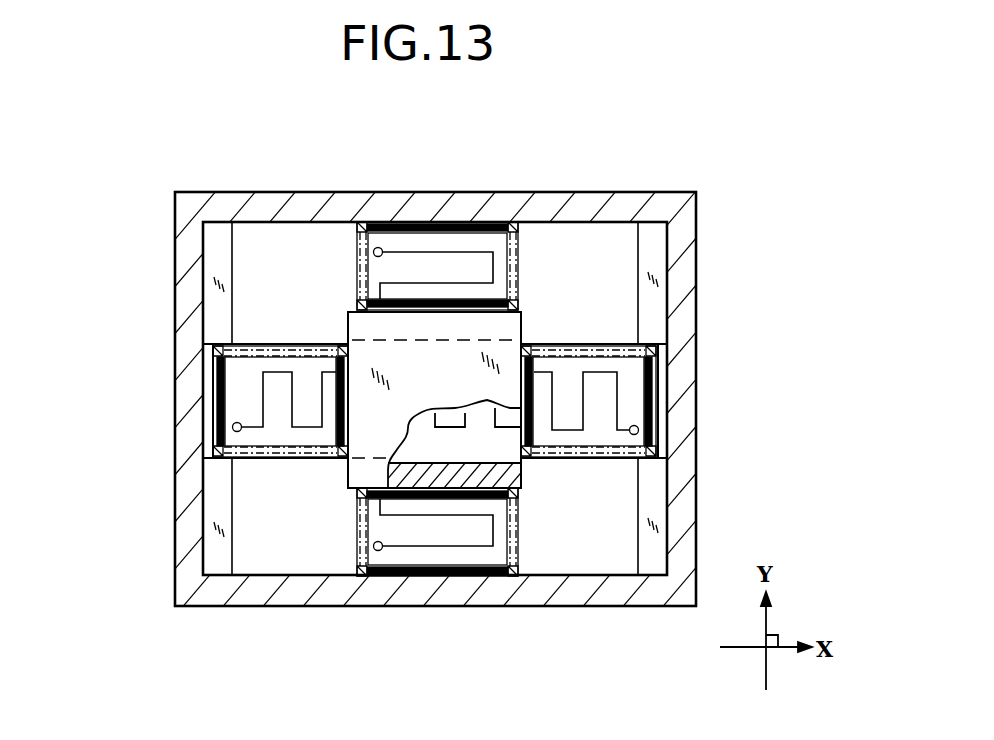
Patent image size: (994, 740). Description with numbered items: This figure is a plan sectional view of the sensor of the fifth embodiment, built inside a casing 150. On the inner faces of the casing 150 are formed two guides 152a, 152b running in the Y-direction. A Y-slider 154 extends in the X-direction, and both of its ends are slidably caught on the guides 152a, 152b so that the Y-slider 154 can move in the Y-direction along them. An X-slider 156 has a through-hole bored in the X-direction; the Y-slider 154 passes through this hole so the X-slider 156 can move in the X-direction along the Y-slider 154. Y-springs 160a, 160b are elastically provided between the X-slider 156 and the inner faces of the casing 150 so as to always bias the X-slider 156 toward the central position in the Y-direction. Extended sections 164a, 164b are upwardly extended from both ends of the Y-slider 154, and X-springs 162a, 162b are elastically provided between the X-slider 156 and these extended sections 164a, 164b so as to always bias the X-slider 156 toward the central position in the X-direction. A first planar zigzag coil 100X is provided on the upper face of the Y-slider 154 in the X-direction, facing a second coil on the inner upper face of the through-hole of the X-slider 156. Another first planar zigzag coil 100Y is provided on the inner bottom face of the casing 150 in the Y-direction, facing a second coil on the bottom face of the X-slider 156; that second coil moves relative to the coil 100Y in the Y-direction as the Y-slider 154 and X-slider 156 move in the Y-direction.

The casing 150 is at (623, 202).
The guide 152a is at (653, 252).
The guide 152b is at (215, 249).
The Y-slider 154 is at (273, 460).
The X-slider 156 is at (373, 325).
The Y-spring 160a is at (491, 586).
The Y-spring 160b is at (521, 258).
The X-spring 162a is at (587, 457).
The X-spring 162b is at (273, 347).
The extended section 164a is at (672, 398).
The extended section 164b is at (210, 383).
The first planar zigzag coil 100X is at (618, 393).
The first planar zigzag coil 100Y is at (440, 545).